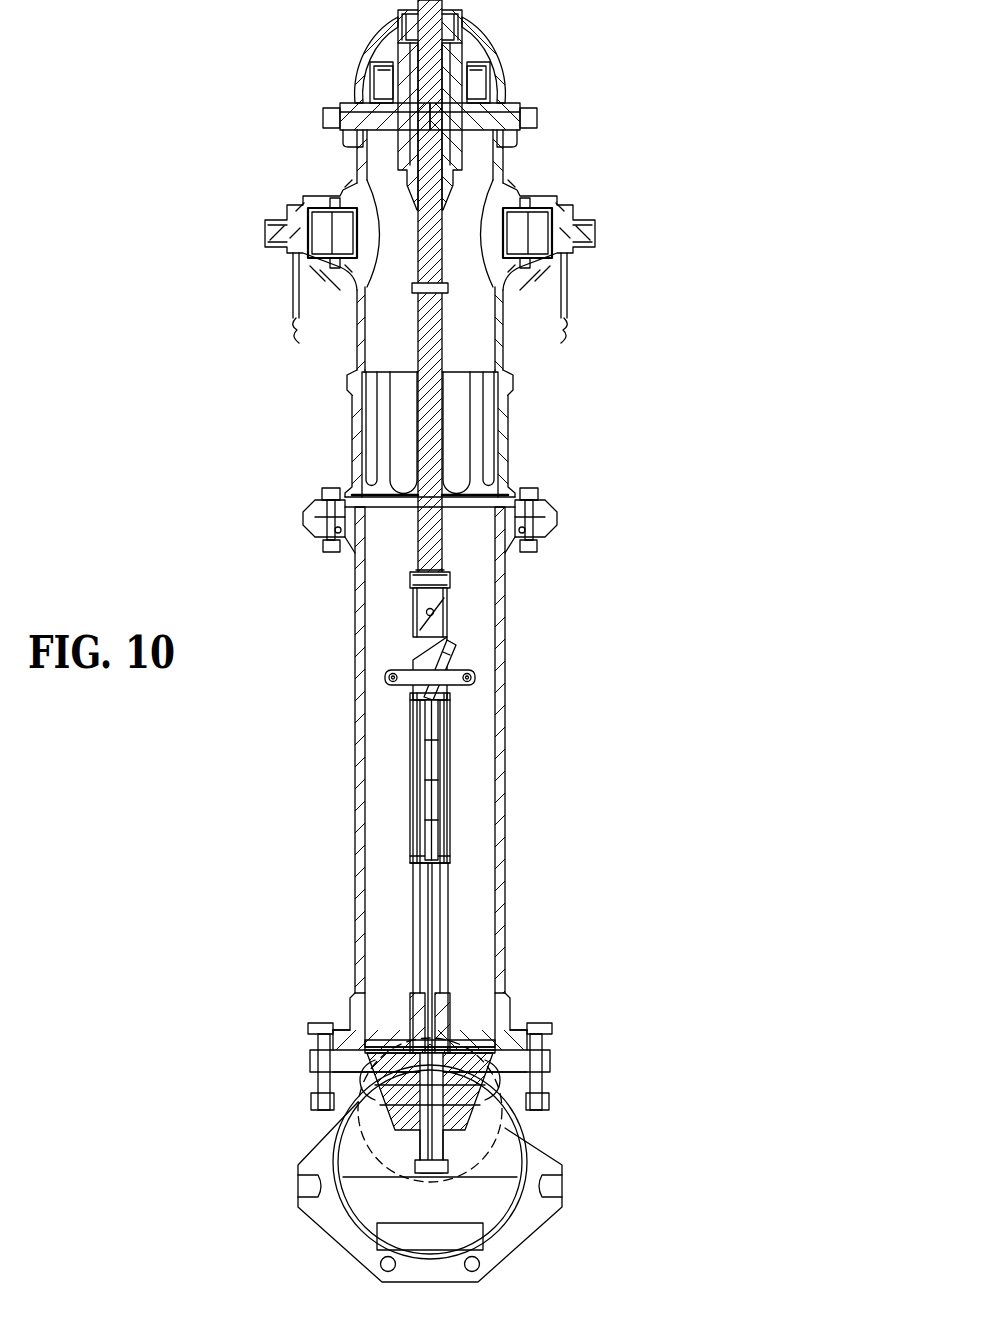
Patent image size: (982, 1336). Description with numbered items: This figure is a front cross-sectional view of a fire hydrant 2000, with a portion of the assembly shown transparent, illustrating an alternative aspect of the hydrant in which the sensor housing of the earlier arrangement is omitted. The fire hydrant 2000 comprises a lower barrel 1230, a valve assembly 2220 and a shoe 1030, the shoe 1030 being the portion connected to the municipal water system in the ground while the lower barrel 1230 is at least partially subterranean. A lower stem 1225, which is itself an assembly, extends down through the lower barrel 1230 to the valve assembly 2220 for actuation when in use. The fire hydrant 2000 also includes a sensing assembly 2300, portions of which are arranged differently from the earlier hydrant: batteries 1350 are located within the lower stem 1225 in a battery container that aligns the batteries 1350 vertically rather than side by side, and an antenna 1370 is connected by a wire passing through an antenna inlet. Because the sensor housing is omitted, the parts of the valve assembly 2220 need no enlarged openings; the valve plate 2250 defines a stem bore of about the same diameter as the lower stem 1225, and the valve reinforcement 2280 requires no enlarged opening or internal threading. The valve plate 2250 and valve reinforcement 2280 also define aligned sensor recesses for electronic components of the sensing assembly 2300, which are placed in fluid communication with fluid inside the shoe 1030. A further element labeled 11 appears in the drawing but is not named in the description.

The fire hydrant 2000 is at (678, 115).
The antenna 1370 is at (457, 647).
The lower stem 1225 is at (448, 730).
The sensing assembly 2300 is at (472, 782).
The batteries 1350 is at (428, 800).
The lower barrel 1230 is at (500, 838).
The valve assembly 2220 is at (527, 982).
The valve reinforcement 2280 is at (490, 1050).
The valve plate 2250 is at (503, 1128).
The seal 11 is at (487, 1093).
The shoe 1030 is at (507, 1192).